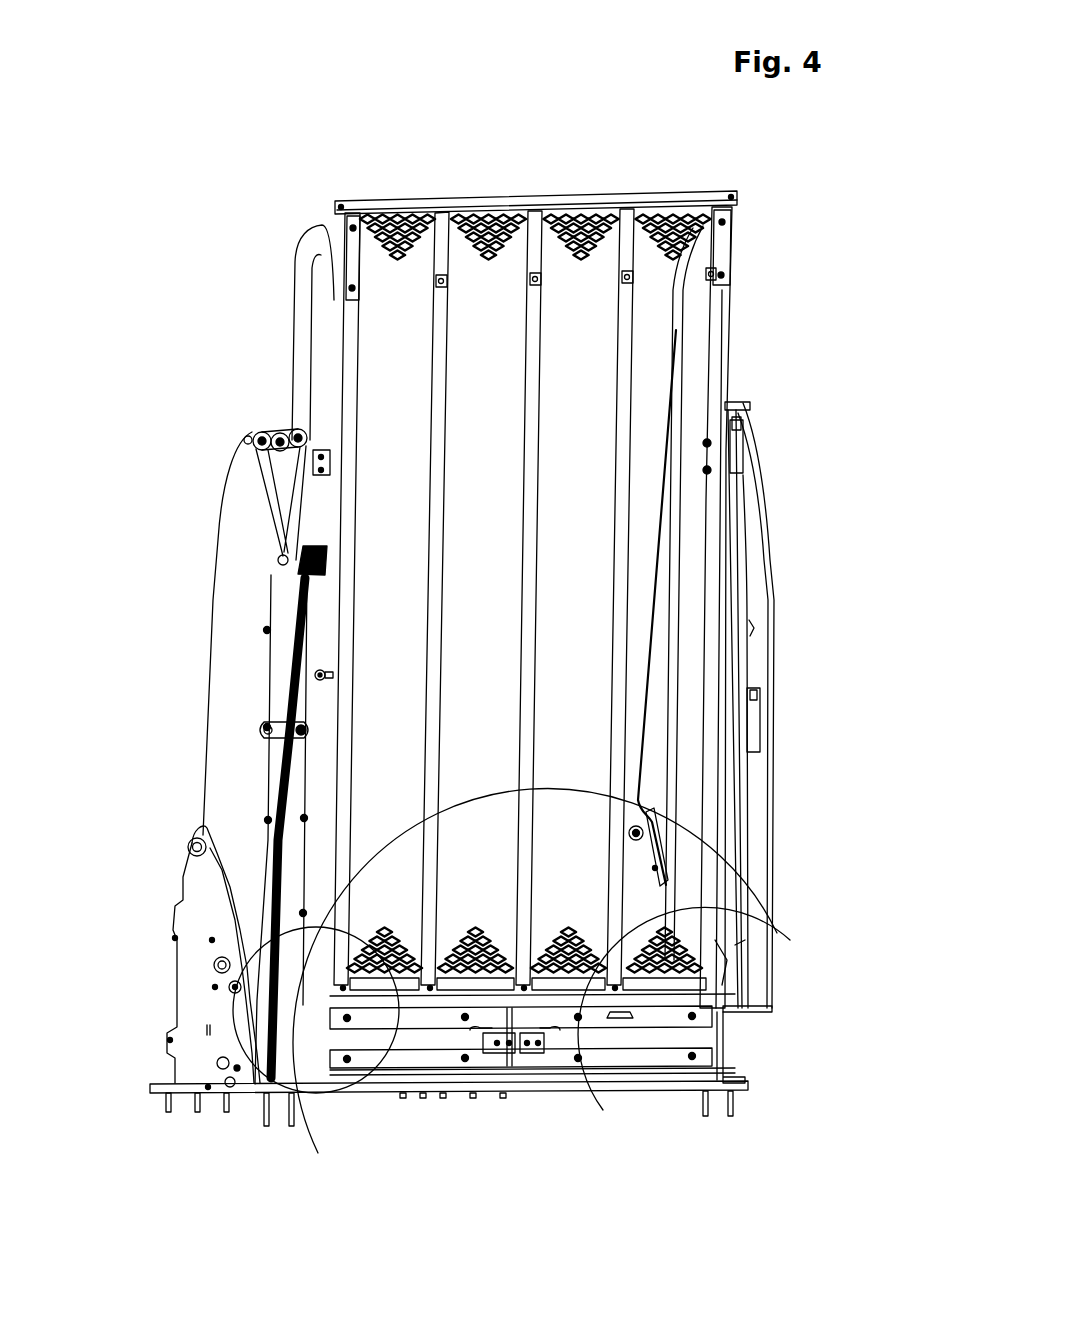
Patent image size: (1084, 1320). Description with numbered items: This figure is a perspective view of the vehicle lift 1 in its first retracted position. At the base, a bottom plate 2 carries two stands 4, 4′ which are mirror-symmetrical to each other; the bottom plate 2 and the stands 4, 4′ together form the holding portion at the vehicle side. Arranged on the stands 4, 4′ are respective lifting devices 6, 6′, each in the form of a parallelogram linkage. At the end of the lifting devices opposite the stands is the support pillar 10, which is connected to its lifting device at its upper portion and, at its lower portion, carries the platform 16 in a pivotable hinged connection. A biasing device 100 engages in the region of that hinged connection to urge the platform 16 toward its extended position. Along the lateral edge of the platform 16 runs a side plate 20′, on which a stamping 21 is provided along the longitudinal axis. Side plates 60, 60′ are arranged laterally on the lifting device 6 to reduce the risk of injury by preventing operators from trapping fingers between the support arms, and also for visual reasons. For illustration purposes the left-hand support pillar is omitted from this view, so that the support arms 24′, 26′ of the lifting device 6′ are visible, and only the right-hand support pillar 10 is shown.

The vehicle lift 1 is at (190, 77).
The bottom plate 2 is at (490, 1112).
The stand 4 is at (640, 860).
The stand 4′ is at (203, 918).
The lifting device 6 is at (758, 370).
The lifting device 6′ is at (253, 388).
The support pillar 10 is at (760, 625).
The platform 16 is at (490, 270).
The side plate 20′ is at (315, 312).
The stamping 21 is at (305, 345).
The support arm 24′ is at (268, 537).
The support arm 26′ is at (288, 606).
The side plate 60 is at (778, 528).
The side plate 60′ is at (236, 520).
The biasing device 100 is at (812, 958).